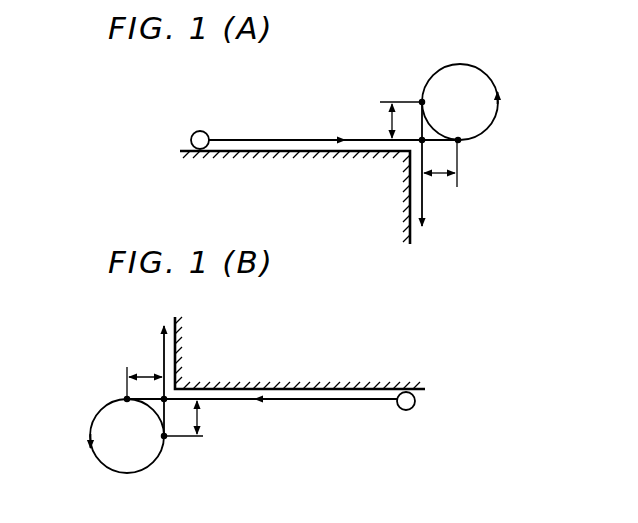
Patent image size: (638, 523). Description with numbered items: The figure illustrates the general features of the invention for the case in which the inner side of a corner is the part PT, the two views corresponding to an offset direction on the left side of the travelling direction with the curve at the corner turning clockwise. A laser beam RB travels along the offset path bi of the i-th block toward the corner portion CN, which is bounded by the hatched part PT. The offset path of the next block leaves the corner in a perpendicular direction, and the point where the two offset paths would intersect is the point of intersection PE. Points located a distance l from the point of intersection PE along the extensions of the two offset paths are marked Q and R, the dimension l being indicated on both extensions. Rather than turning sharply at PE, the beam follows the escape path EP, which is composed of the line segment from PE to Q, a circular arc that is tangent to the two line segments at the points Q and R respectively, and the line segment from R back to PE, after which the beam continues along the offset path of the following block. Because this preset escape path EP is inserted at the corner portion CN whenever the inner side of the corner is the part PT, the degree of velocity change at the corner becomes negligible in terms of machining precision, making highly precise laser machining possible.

In FIG. 1A, the laser beam RB is at (206, 131).
In FIG. 1B, the laser beam RB is at (410, 411).
In FIG. 1A, the offset path of the i-th block bi is at (283, 138).
In FIG. 1B, the offset path of the i-th block bi is at (288, 403).
In FIG. 1A, the escape path EP is at (498, 113).
In FIG. 1B, the escape path EP is at (102, 473).
In FIG. 1A, the corner portion CN is at (388, 170).
In FIG. 1B, the corner portion CN is at (192, 372).
In FIG. 1A, the part PT is at (384, 224).
In FIG. 1B, the part PT is at (338, 384).
In FIG. 1A, the point R is at (414, 90).
In FIG. 1B, the point R is at (170, 446).
In FIG. 1A, the point of intersection PE is at (434, 128).
In FIG. 1B, the point of intersection PE is at (152, 413).
In FIG. 1A, the point Q is at (467, 150).
In FIG. 1B, the point Q is at (114, 388).
In FIG. 1A, the distance l is at (413, 149).
In FIG. 1B, the distance l is at (168, 395).